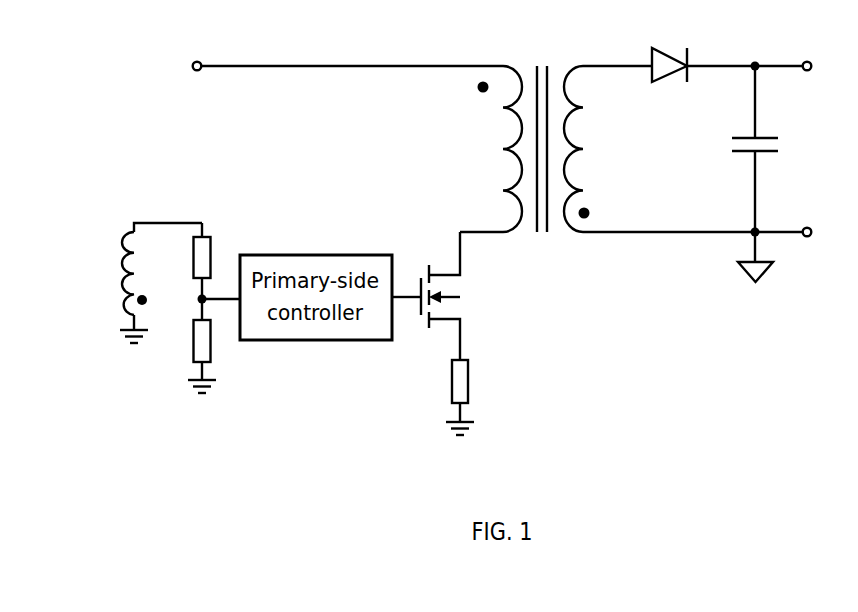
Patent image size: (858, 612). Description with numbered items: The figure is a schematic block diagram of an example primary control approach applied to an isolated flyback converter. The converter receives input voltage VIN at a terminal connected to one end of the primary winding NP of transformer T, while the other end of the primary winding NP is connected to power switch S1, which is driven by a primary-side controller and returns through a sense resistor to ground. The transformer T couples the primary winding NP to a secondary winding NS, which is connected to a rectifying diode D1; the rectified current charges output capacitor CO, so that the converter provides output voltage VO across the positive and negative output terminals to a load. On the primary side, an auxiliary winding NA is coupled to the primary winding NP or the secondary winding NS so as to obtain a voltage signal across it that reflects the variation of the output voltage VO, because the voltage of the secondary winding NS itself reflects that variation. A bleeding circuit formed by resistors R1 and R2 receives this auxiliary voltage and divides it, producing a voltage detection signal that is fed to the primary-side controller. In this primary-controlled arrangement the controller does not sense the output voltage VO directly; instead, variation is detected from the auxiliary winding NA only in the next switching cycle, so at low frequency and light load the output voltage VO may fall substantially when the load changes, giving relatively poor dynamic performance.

The input voltage VIN is at (326, 64).
The auxiliary winding NA is at (143, 283).
The resistor R1 is at (187, 261).
The resistor R2 is at (190, 346).
The power switch S1 is at (457, 296).
The transformer T is at (542, 134).
The primary winding NP is at (491, 149).
The secondary winding NS is at (683, 149).
The diode D1 is at (727, 52).
The output capacitor CO is at (740, 172).
The output voltage VO is at (806, 149).